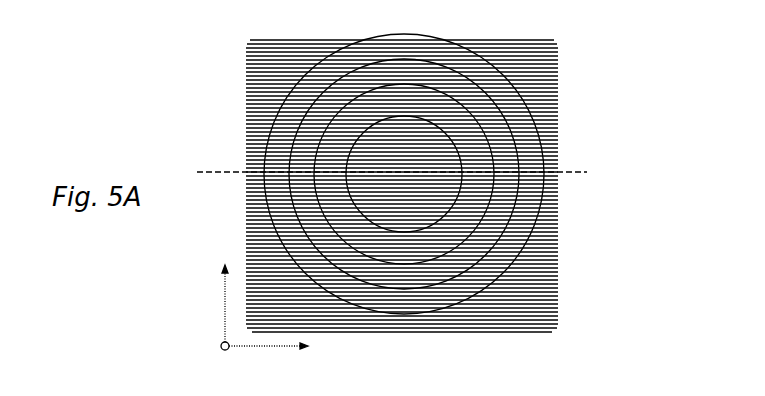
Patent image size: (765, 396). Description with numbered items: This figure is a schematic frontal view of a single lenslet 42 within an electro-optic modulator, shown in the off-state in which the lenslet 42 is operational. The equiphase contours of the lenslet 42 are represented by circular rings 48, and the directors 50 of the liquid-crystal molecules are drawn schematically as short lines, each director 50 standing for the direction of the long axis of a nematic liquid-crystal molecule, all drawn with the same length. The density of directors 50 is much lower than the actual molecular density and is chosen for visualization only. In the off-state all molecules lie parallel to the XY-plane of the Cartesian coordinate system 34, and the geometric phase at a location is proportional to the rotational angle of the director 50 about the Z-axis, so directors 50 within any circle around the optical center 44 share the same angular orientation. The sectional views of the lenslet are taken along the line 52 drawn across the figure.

The lenslet 42 is at (244, 75).
The directors 50 is at (505, 100).
The optical center 44 is at (540, 165).
The line 52 is at (587, 172).
The circular rings 48 is at (560, 272).
The Cartesian coordinate system 34 is at (200, 295).